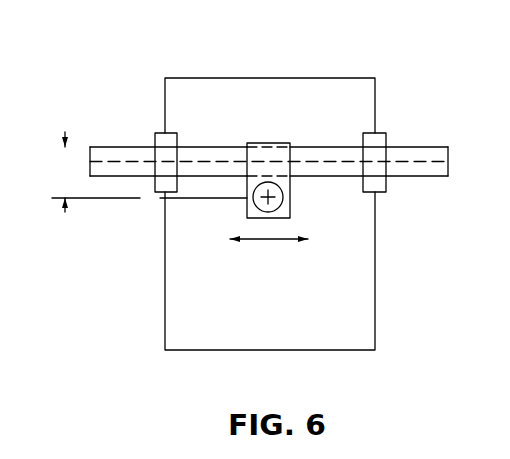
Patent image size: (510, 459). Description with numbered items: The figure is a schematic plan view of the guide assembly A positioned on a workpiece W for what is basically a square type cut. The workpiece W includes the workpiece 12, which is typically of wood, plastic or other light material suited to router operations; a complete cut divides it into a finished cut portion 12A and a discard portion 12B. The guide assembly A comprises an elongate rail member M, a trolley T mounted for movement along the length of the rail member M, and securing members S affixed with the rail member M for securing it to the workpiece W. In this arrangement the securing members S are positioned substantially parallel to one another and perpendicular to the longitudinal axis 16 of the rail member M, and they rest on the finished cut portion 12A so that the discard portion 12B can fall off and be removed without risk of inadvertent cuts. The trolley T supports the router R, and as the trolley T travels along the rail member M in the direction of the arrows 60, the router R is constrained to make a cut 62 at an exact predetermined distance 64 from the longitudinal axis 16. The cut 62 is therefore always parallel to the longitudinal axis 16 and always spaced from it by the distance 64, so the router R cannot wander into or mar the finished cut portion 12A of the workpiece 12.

The workpiece 12 is at (310, 214).
The finished cut portion 12A is at (287, 105).
The discard portion 12B is at (275, 318).
The longitudinal axis 16 is at (90, 162).
The arrows 60 is at (274, 260).
The cut 62 is at (169, 227).
The predetermined distance 64 is at (149, 172).
The guide assembly A is at (92, 107).
The rail member M is at (137, 113).
The workpiece W is at (308, 41).
The trolley T is at (299, 153).
The securing member S is at (283, 180).
The router R is at (229, 226).